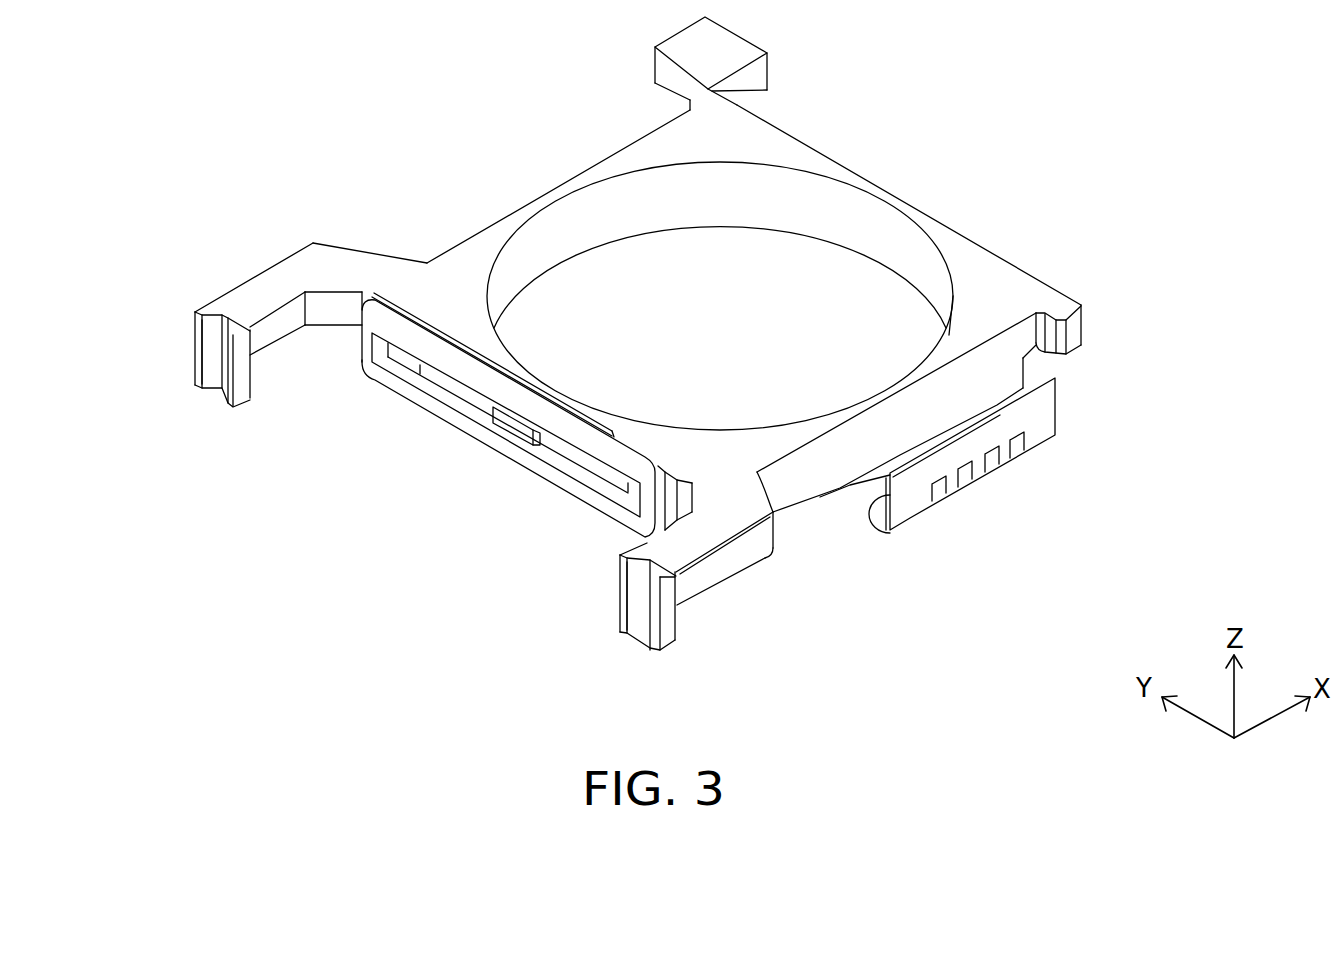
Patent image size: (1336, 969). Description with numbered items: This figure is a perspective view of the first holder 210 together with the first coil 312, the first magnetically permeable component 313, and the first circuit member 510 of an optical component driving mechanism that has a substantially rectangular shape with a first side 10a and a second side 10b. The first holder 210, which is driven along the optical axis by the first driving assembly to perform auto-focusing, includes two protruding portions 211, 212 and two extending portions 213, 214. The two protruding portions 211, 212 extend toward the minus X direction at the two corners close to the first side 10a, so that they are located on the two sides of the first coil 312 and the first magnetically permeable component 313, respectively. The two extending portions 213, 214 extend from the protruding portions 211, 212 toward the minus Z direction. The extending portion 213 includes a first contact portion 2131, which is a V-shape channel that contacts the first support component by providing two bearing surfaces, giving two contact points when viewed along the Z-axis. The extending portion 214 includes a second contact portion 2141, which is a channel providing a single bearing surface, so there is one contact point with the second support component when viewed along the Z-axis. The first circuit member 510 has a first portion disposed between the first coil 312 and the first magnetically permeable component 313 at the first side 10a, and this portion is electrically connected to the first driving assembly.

The first side 10a is at (404, 552).
The second side 10b is at (982, 117).
The first holder 210 is at (762, 145).
The protruding portion 211 is at (745, 502).
The protruding portion 212 is at (270, 282).
The extending portion 213 is at (676, 622).
The extending portion 214 is at (198, 338).
The second contact portion 2141 is at (215, 368).
The first contact portion 2131 is at (640, 605).
The first coil 312 is at (410, 393).
The first magnetically permeable component 313 is at (490, 356).
The first circuit member 510 is at (1040, 411).